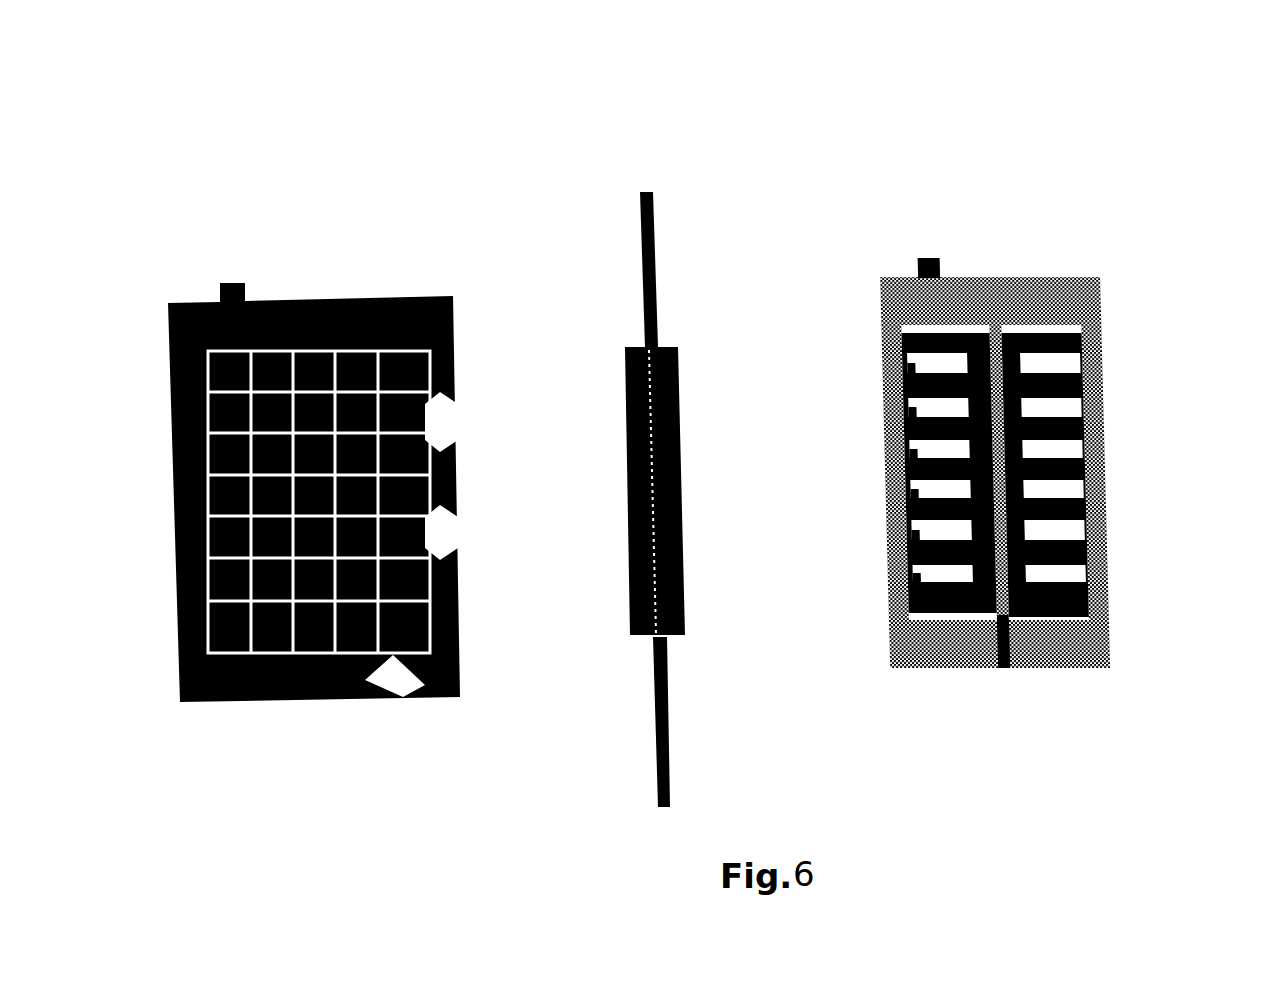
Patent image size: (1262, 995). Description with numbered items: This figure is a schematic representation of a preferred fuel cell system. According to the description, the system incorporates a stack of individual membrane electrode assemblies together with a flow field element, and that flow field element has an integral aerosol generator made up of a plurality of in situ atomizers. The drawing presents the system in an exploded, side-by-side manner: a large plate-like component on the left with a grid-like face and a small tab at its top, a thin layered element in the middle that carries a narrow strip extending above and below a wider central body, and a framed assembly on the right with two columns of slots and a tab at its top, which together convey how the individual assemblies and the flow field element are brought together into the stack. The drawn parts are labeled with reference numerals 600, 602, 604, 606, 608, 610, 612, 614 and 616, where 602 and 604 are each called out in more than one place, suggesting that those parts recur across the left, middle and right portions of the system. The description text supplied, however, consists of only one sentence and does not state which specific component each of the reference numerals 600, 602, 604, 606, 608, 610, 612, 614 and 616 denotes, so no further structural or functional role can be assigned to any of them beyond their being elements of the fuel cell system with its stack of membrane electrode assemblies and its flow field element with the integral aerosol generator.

The electrochemical cell assembly 600 is at (998, 423).
The electrode 602 is at (903, 404).
The current collector 604 is at (658, 762).
The separator 606 is at (683, 637).
The electrode stack 608 is at (911, 470).
The notch 610 is at (392, 655).
The electrode segment 612 is at (422, 422).
The electrode segment 614 is at (428, 532).
The housing frame 616 is at (995, 463).